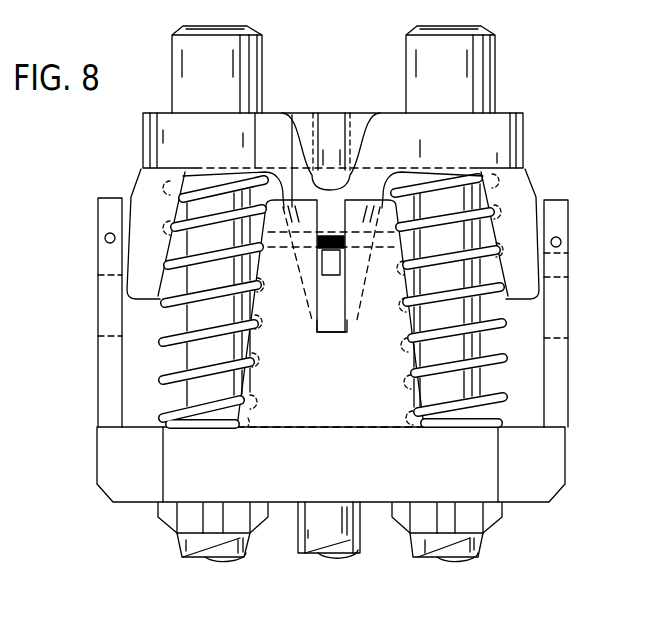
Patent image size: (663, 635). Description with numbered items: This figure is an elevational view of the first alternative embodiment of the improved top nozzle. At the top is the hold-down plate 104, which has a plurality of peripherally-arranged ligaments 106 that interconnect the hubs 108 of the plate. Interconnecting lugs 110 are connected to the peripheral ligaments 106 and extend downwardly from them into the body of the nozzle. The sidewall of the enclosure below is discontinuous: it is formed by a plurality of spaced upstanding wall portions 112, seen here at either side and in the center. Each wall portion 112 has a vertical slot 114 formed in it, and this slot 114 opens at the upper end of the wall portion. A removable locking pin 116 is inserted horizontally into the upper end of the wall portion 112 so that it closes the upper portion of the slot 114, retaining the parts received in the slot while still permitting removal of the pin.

The hold-down plate 104 is at (530, 113).
The peripherally-arranged ligaments 106 is at (268, 130).
The hubs 108 is at (143, 134).
The interconnecting lugs 110 is at (341, 190).
The upstanding wall portions 112 is at (97, 360).
The vertical slot 114 is at (318, 330).
The removable locking pin 116 is at (335, 244).